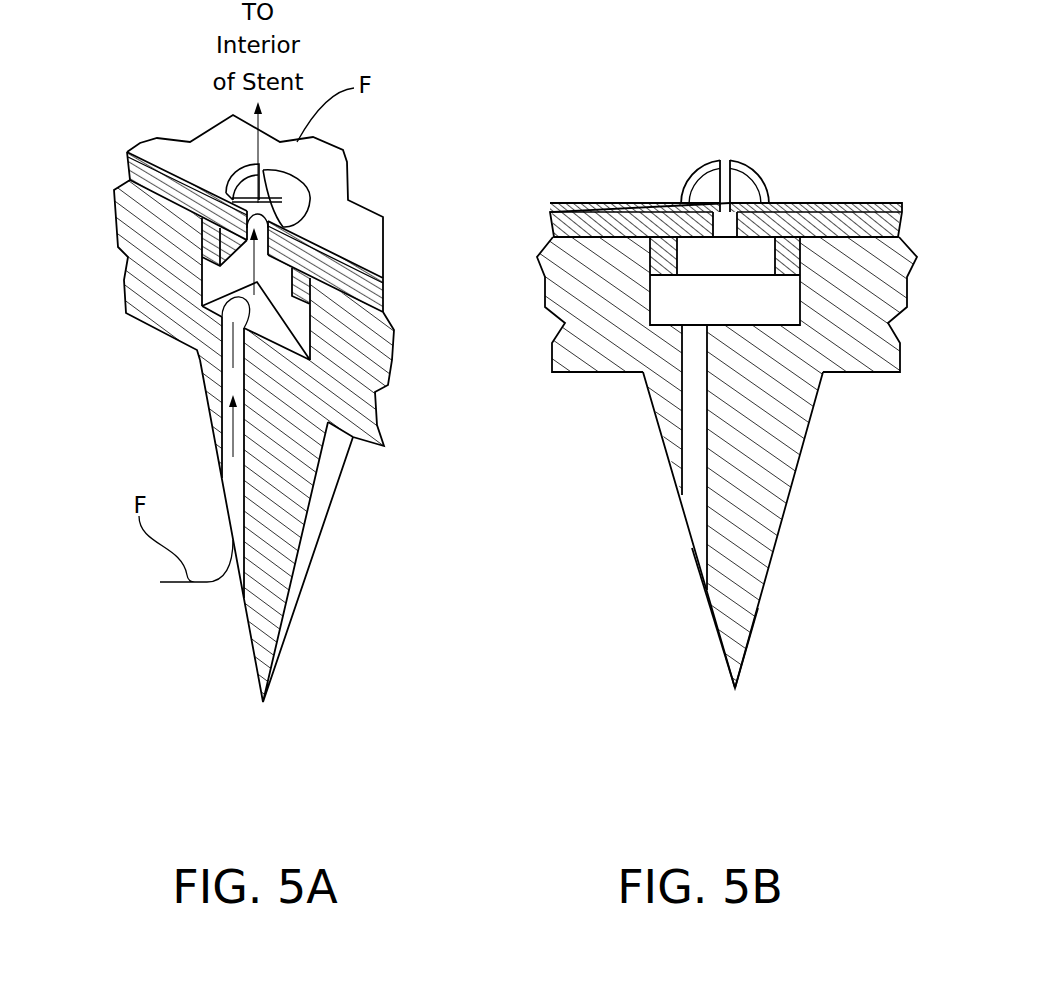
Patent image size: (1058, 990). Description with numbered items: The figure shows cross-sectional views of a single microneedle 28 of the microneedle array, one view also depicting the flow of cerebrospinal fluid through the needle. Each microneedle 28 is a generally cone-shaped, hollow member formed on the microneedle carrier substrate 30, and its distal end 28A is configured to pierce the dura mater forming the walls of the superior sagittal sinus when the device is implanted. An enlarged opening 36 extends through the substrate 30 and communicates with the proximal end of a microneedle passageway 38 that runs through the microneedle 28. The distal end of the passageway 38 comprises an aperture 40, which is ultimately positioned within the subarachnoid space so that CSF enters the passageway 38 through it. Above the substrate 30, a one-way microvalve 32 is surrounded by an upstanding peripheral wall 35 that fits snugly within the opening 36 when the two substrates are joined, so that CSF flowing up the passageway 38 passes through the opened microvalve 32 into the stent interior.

In FIG. 5B, the microneedle 28 is at (828, 525).
In FIG. 5B, the distal end 28A is at (758, 608).
In FIG. 5B, the microneedle carrier substrate 30 is at (870, 273).
In FIG. 5A, the one-way microvalve 32 is at (305, 172).
In FIG. 5B, the one-way microvalve 32 is at (748, 141).
In FIG. 5A, the upstanding peripheral wall 35 is at (210, 245).
In FIG. 5B, the upstanding peripheral wall 35 is at (663, 257).
In FIG. 5B, the opening 36 is at (680, 297).
In FIG. 5A, the microneedle passageway 38 is at (225, 395).
In FIG. 5B, the microneedle passageway 38 is at (695, 439).
In FIG. 5A, the aperture 40 is at (238, 580).
In FIG. 5B, the aperture 40 is at (692, 548).